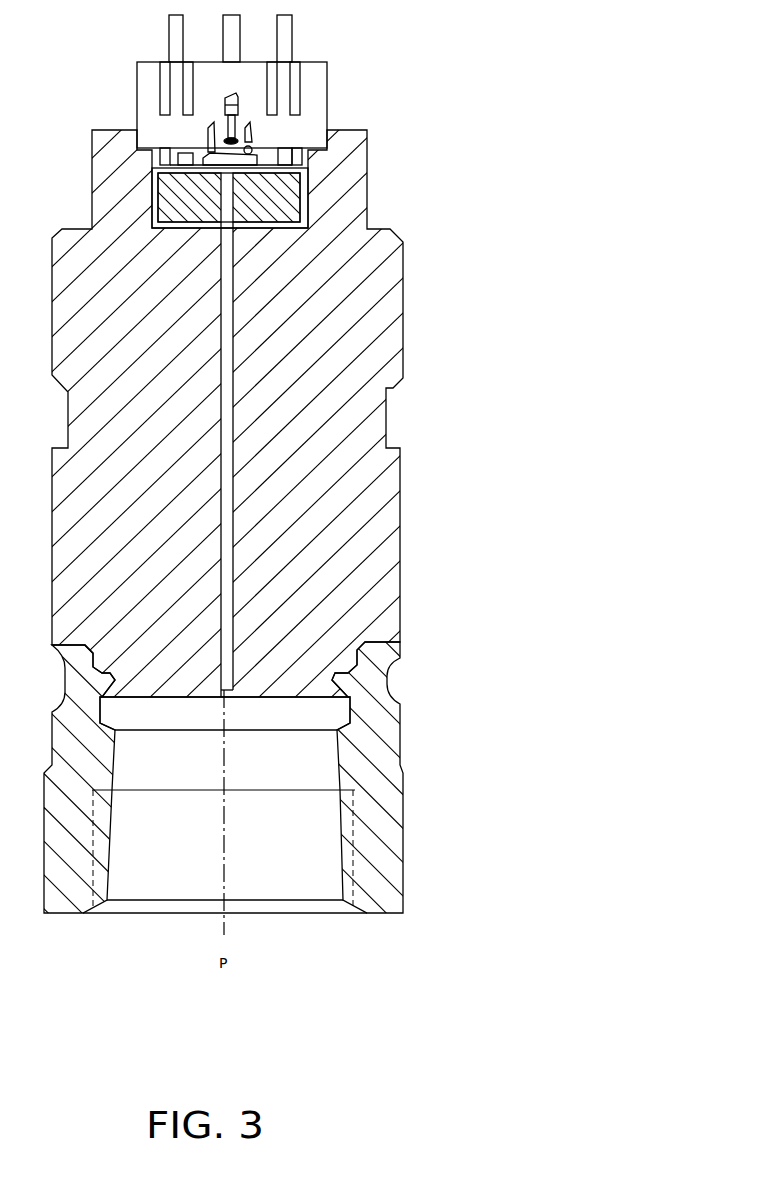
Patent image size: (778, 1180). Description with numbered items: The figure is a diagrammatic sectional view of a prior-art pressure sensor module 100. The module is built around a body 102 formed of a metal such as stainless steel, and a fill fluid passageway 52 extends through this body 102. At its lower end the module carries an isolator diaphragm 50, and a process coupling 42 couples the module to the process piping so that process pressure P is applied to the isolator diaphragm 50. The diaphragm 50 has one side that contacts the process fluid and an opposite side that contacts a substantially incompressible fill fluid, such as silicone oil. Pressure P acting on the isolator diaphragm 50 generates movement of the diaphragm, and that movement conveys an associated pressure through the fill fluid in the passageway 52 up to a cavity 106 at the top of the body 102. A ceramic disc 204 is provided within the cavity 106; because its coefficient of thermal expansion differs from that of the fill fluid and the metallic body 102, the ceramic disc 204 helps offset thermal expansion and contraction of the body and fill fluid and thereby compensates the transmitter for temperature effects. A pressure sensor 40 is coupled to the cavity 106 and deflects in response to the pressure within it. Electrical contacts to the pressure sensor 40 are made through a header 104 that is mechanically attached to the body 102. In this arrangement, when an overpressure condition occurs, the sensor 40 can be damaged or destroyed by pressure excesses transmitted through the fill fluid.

The pressure sensor module 100 is at (553, 263).
The body 102 is at (357, 567).
The header 104 is at (313, 87).
The cavity 106 is at (307, 170).
The ceramic disc 204 is at (290, 193).
The pressure sensor 40 is at (252, 148).
The process coupling 42 is at (382, 812).
The isolator diaphragm 50 is at (300, 702).
The fill fluid passageway 52 is at (233, 418).